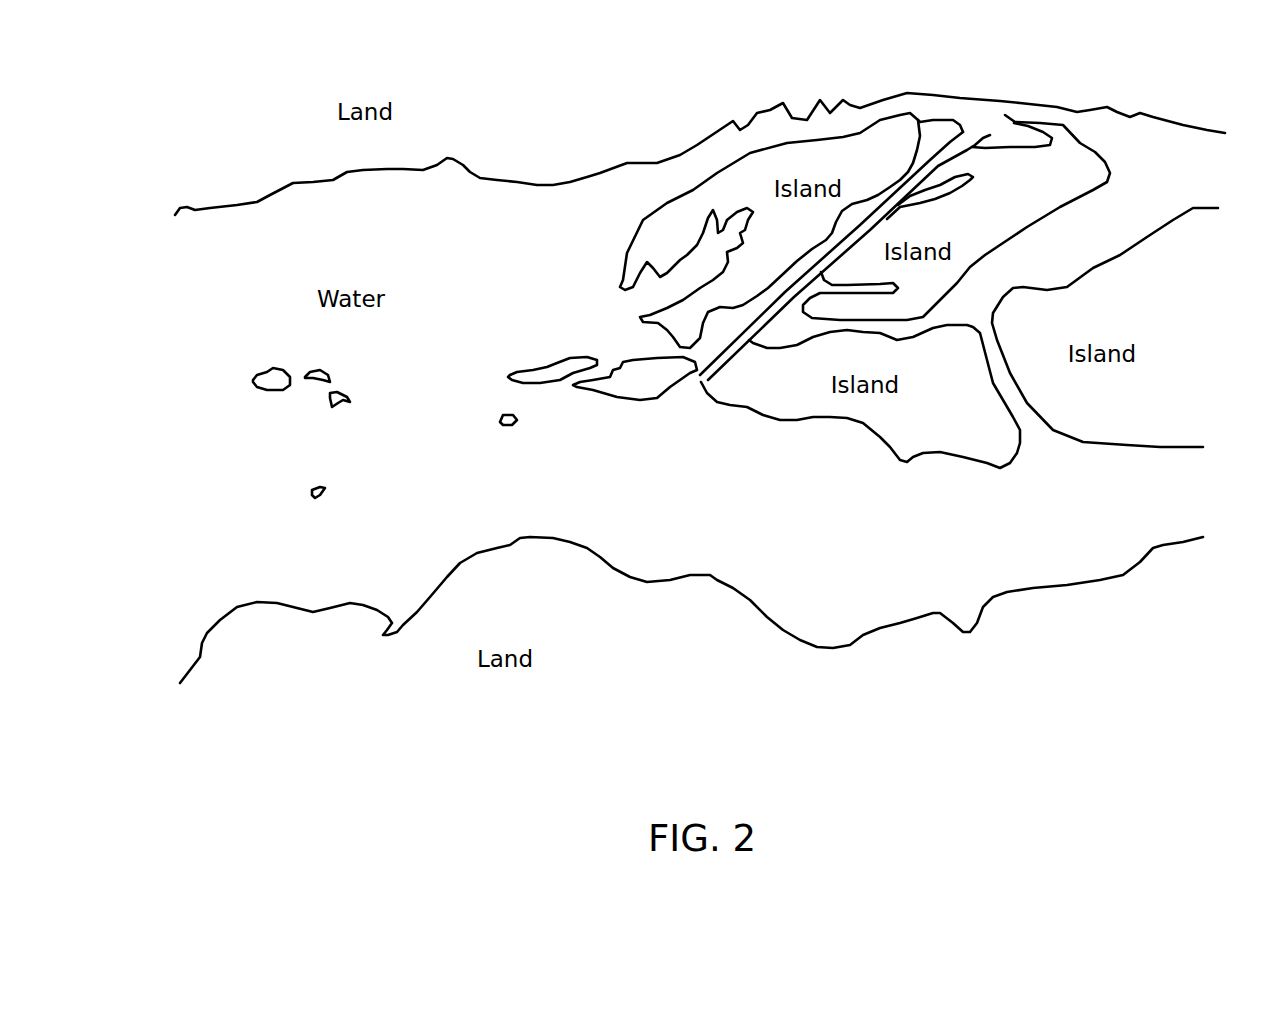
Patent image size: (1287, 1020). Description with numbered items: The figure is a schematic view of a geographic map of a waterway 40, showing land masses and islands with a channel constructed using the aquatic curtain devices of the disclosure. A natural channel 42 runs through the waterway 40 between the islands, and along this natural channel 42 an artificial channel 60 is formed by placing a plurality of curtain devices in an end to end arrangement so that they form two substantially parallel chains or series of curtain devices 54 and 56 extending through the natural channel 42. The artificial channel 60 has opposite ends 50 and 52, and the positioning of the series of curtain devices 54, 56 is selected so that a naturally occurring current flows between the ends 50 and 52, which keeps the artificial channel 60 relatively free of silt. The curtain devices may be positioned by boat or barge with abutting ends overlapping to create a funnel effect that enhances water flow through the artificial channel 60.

The waterway 40 is at (494, 486).
The natural channel 42 is at (748, 325).
The end of artificial channel 50 is at (978, 124).
The end of artificial channel 52 is at (703, 383).
The series of curtain devices 54 is at (956, 187).
The series of curtain devices 56 is at (965, 130).
The artificial channel 60 is at (760, 328).